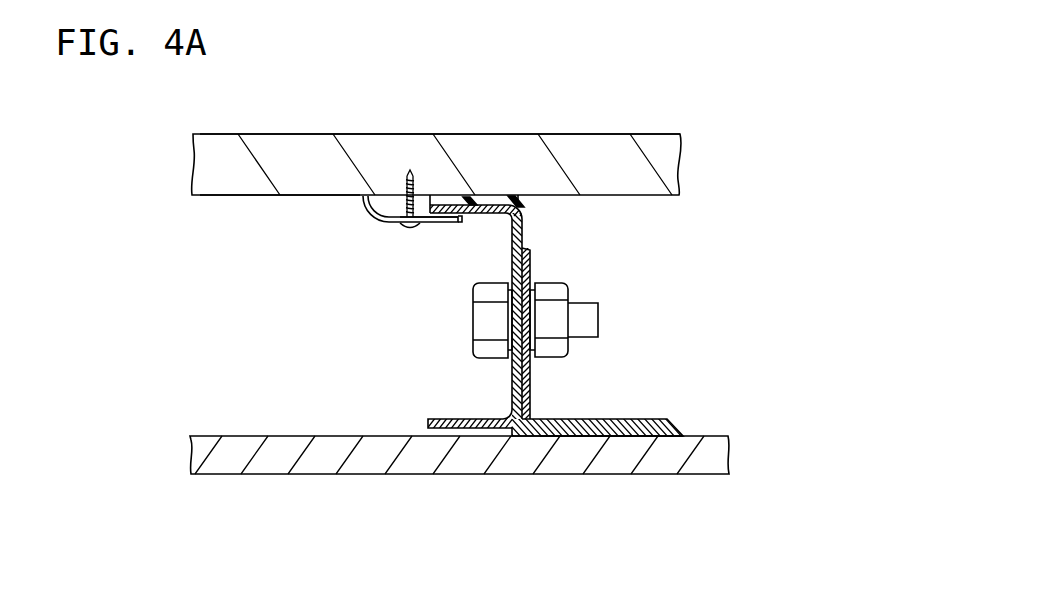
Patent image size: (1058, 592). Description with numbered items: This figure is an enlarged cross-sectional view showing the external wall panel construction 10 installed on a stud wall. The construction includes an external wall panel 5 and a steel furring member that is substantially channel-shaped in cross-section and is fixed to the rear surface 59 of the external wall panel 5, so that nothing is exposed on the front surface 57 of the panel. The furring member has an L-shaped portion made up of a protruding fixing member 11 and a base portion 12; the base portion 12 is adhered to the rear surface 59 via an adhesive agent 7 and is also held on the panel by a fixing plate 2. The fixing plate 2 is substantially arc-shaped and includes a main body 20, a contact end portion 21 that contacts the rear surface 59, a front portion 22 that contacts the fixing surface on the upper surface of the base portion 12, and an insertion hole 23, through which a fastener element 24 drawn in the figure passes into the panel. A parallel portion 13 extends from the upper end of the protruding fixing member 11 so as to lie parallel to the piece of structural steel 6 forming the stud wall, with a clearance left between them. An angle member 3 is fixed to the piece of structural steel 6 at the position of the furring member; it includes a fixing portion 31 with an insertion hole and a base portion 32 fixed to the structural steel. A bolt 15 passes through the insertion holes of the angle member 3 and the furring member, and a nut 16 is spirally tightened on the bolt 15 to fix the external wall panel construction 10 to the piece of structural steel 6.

The fixing plate 2 is at (362, 199).
The angle member 3 is at (600, 424).
The external wall panel 5 is at (663, 166).
The piece of structural steel 6 is at (692, 455).
The adhesive agent 7 is at (478, 200).
The external wall panel construction 10 is at (558, 300).
The protruding fixing member 11 is at (523, 234).
The base portion 12 is at (498, 197).
The parallel portion 13 is at (445, 428).
The bolt 15 is at (493, 322).
The nut 16 is at (555, 322).
The main body 20 is at (423, 222).
The contact end portion 21 is at (357, 207).
The front portion 22 is at (449, 222).
The insertion hole 23 is at (404, 224).
The screw 24 is at (410, 172).
The fixing portion 31 is at (528, 272).
The base portion 32 is at (634, 432).
The front surface 57 is at (302, 134).
The rear surface 59 is at (268, 195).